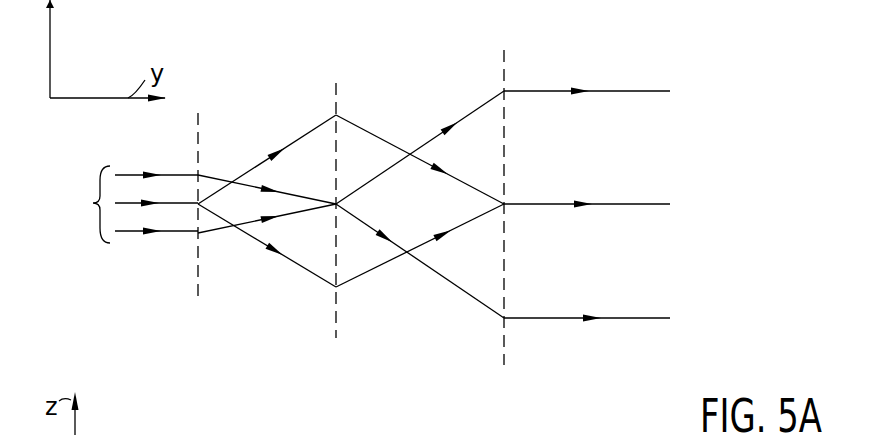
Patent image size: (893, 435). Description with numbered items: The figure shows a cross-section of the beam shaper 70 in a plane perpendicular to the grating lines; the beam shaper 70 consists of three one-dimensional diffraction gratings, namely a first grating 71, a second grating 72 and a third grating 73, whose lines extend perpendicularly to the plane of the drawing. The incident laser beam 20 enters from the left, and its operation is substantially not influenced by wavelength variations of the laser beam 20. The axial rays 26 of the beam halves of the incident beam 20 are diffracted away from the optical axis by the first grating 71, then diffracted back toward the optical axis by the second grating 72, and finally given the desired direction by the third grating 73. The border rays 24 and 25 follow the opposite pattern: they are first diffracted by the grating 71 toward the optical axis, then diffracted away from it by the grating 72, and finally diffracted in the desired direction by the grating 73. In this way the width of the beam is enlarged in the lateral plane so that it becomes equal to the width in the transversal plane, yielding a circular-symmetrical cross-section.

The laser beam 20 is at (92, 203).
The border ray 24 is at (134, 172).
The border ray 25 is at (169, 233).
The axial rays 26 is at (118, 205).
The beam shaper 70 is at (382, 28).
The first grating 71 is at (199, 290).
The second grating 72 is at (337, 327).
The third grating 73 is at (506, 350).